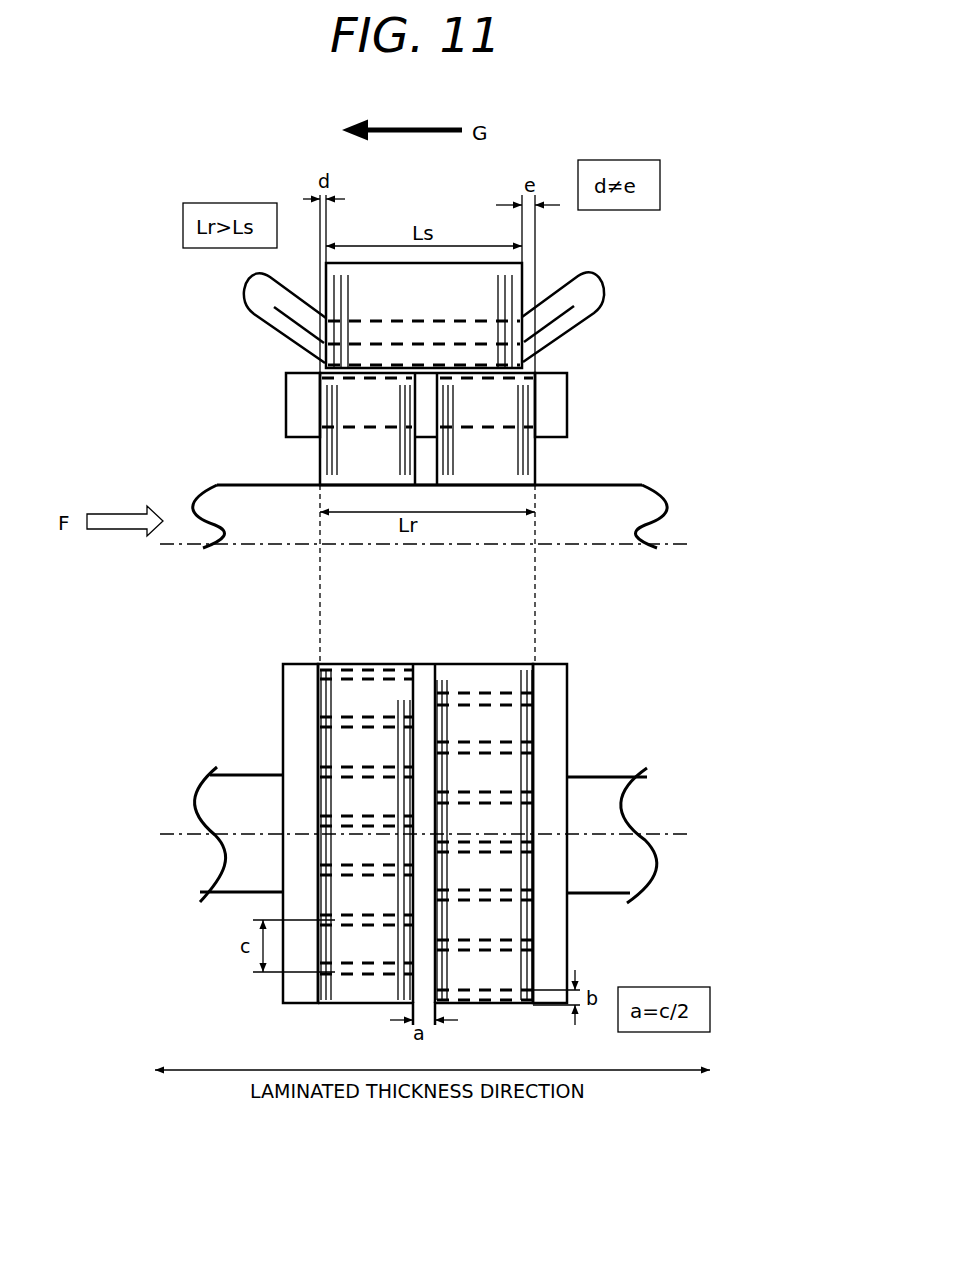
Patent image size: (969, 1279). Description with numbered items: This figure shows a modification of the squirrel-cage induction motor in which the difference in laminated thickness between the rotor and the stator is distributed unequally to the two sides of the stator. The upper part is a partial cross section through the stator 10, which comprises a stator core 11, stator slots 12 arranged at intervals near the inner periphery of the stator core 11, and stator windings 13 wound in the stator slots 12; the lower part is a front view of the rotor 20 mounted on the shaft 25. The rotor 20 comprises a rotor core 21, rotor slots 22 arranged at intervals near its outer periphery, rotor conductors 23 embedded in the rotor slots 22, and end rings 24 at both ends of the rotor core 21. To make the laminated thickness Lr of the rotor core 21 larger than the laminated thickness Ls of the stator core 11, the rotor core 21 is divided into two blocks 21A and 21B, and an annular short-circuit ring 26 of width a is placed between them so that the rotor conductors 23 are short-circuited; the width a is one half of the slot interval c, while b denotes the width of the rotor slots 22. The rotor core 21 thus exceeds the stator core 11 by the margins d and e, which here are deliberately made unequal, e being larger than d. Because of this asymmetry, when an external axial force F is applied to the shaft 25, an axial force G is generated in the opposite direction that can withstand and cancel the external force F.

The stator 10 is at (472, 262).
The stator core 11 is at (407, 295).
The stator slots 12 is at (397, 320).
The stator windings 13 is at (583, 295).
The rotor 20 is at (230, 483).
The rotor core 21 is at (325, 470).
The block 21A is at (375, 462).
The block 21B is at (483, 465).
The rotor slots 22 is at (358, 460).
The rotor conductors 23 is at (353, 400).
The end rings 24 is at (297, 393).
The shaft 25 is at (243, 535).
The short-circuit ring 26 is at (425, 420).